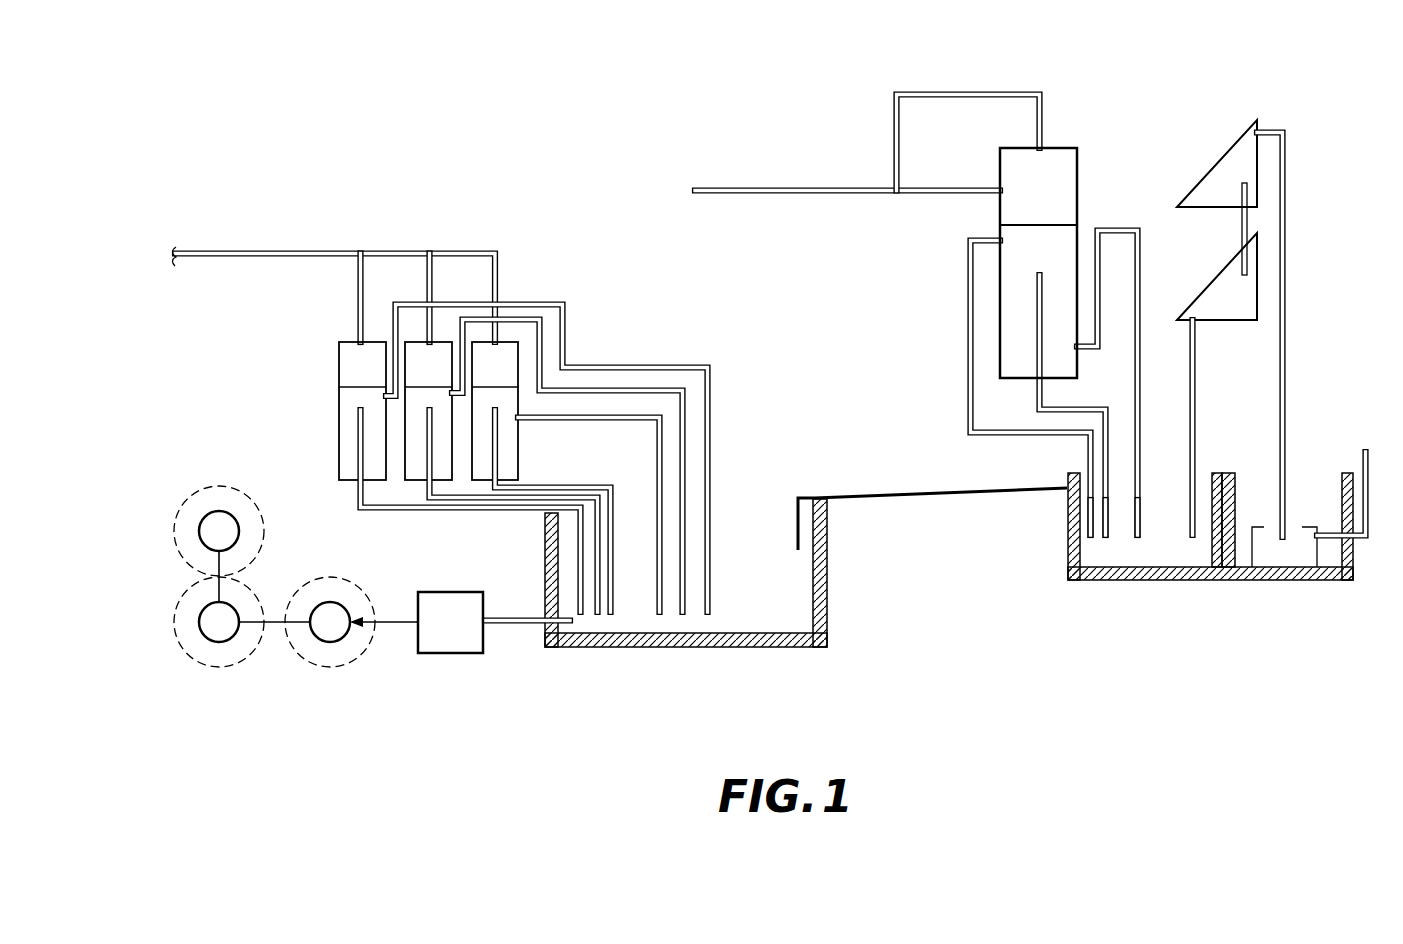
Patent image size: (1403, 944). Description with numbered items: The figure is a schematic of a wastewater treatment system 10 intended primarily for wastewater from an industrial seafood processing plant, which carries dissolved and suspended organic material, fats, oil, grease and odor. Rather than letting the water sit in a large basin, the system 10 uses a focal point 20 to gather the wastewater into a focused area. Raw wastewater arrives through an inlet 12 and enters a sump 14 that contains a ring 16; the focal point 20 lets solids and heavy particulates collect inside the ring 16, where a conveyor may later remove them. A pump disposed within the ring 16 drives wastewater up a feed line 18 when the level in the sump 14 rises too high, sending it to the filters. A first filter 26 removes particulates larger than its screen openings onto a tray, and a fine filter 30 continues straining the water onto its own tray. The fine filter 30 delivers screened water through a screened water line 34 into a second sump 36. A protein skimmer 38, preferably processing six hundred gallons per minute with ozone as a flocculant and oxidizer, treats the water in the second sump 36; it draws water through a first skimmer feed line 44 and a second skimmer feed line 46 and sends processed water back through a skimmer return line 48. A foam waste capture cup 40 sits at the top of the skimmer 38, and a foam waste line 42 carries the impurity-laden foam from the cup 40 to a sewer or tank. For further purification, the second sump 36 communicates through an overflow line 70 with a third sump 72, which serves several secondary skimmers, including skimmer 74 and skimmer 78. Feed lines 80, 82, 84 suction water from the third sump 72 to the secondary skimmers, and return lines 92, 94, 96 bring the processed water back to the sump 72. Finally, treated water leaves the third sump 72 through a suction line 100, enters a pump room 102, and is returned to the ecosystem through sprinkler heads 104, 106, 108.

The wastewater treatment system 10 is at (318, 139).
The inlet 12 is at (1366, 452).
The sump 14 is at (1287, 581).
The ring 16 is at (1313, 548).
The feed line 18 is at (1258, 580).
The focal point 20 is at (1305, 494).
The filter 26 is at (1210, 196).
The fine filter 30 is at (1215, 311).
The screened water line 34 is at (1190, 538).
The second sump 36 is at (1143, 580).
The protein skimmer 38 is at (1092, 183).
The foam waste capture cup 40 is at (1027, 200).
The foam waste line 42 is at (967, 92).
The first skimmer feed line 44 is at (1068, 578).
The second skimmer feed line 46 is at (1092, 536).
The skimmer return line 48 is at (1137, 538).
The overflow line 70 is at (933, 493).
The third sump 72 is at (797, 648).
The secondary skimmer 74 is at (535, 436).
The secondary skimmer 78 is at (318, 419).
The feed line 80 is at (706, 614).
The feed line 82 is at (682, 614).
The feed line 84 is at (658, 614).
The return line 92 is at (610, 614).
The return line 94 is at (596, 614).
The return line 96 is at (580, 614).
The suction line 100 is at (517, 624).
The pump room 102 is at (437, 634).
The sprinkler head 104 is at (330, 643).
The sprinkler head 106 is at (198, 622).
The sprinkler head 108 is at (198, 531).